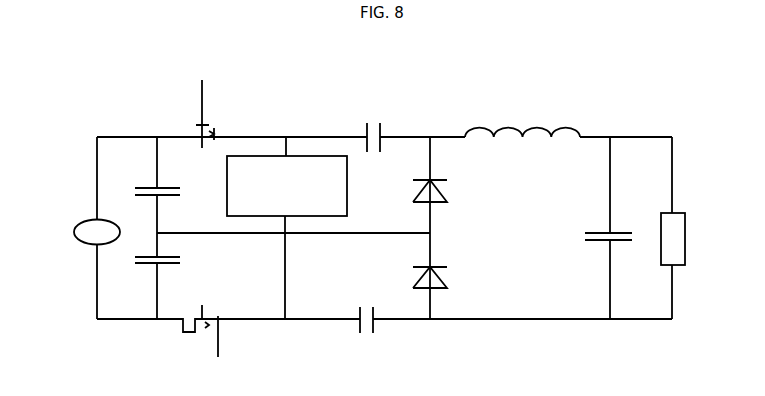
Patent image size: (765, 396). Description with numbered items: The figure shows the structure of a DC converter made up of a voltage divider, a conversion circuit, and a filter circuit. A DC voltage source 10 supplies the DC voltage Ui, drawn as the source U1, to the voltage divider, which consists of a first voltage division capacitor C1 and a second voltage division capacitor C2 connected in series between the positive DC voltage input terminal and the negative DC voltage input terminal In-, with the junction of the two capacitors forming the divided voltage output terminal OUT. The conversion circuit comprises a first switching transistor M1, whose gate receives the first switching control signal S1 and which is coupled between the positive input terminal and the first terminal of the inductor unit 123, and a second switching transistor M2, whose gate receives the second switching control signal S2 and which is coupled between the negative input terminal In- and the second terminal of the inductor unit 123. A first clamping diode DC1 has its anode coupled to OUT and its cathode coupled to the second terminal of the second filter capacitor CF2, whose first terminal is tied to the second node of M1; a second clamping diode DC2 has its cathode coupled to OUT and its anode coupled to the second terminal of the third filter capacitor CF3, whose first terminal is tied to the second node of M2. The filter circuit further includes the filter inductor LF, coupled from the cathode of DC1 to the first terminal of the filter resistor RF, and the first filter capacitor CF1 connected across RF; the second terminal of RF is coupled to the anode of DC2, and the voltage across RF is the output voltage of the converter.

The DC voltage source 10 is at (78, 223).
The voltage source U1 is at (73, 232).
The first voltage division capacitor C1 is at (145, 181).
The second voltage division capacitor C2 is at (143, 272).
The negative DC voltage input terminal In- is at (147, 348).
The divided voltage output terminal OUT is at (180, 222).
The first switching control signal S1 is at (193, 114).
The first switching transistor M1 is at (234, 130).
The inductor unit 123 is at (348, 187).
The second filter capacitor CF2 is at (367, 128).
The first clamping diode DC1 is at (454, 193).
The second clamping diode DC2 is at (451, 279).
The filter inductor LF is at (522, 122).
The first filter capacitor CF1 is at (576, 240).
The filter resistor RF is at (691, 239).
The third filter capacitor CF3 is at (364, 332).
The second switching transistor M2 is at (227, 323).
The second switching control signal S2 is at (205, 349).